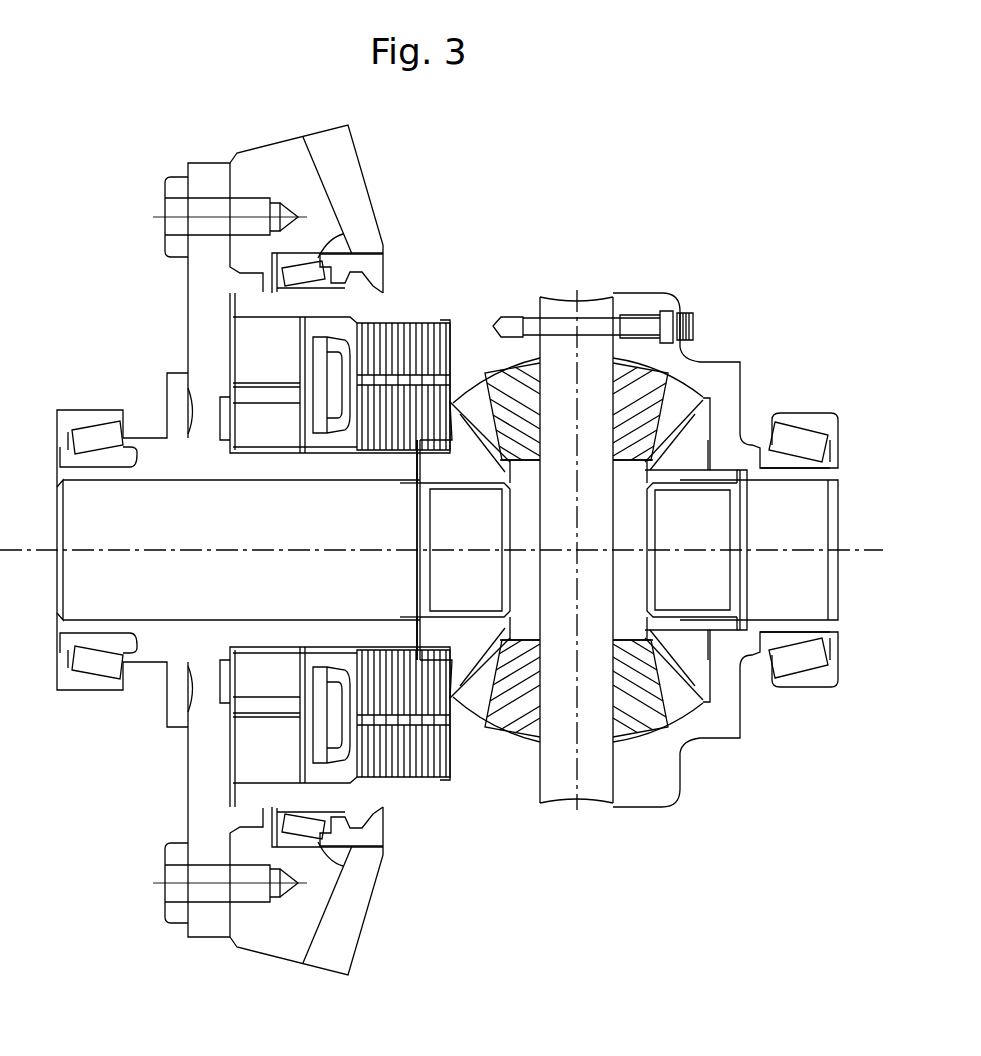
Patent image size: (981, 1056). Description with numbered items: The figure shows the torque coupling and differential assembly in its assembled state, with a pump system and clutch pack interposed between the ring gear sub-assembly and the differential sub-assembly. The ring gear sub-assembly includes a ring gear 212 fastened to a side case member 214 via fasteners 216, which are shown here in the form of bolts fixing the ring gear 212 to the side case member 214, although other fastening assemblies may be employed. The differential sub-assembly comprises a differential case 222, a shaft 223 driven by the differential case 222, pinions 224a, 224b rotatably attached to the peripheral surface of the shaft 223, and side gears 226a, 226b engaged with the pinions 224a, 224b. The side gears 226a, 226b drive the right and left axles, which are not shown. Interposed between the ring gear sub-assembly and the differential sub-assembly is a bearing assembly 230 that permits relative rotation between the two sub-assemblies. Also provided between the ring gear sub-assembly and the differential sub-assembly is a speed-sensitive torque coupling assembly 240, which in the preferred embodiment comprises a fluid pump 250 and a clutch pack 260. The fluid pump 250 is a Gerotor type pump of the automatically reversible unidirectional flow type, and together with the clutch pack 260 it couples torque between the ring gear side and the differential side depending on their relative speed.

The ring gear 212 is at (300, 175).
The side case member 214 is at (200, 310).
The fasteners 216 is at (165, 205).
The differential case 222 is at (727, 718).
The shaft 223 is at (596, 765).
The pinion 224a is at (637, 383).
The pinion 224b is at (637, 717).
The side gear 226a is at (463, 463).
The side gear 226b is at (693, 443).
The bearing assembly 230 is at (318, 258).
The speed-sensitive torque coupling assembly 240 is at (367, 526).
The fluid pump 250 is at (203, 458).
The clutch pack 260 is at (313, 458).